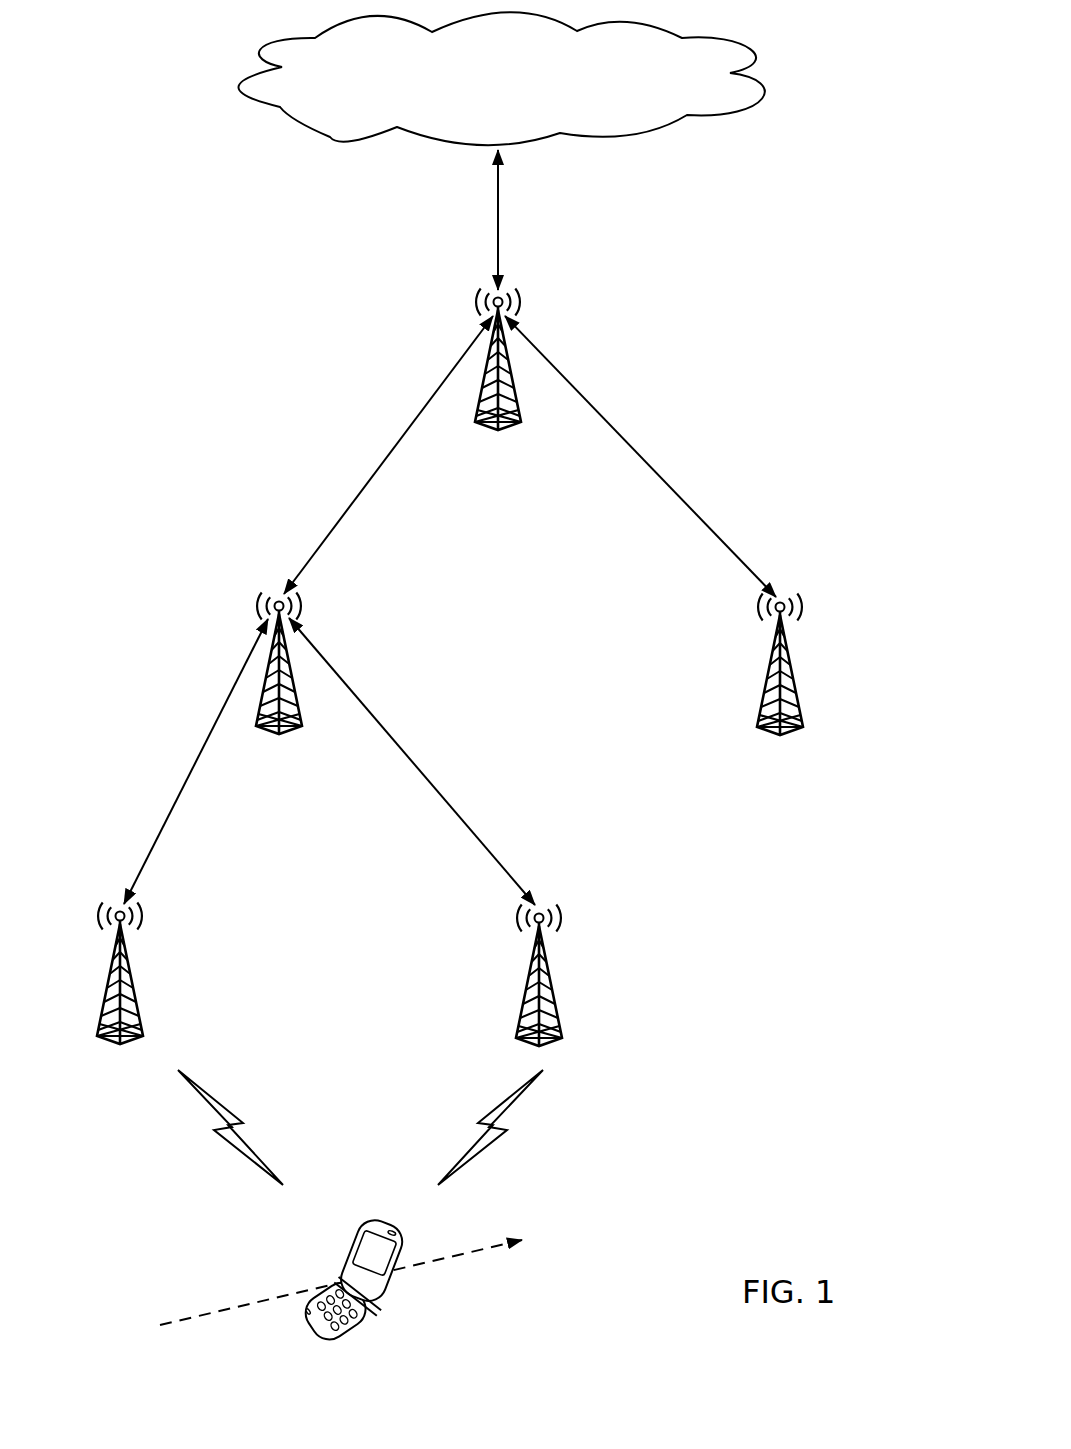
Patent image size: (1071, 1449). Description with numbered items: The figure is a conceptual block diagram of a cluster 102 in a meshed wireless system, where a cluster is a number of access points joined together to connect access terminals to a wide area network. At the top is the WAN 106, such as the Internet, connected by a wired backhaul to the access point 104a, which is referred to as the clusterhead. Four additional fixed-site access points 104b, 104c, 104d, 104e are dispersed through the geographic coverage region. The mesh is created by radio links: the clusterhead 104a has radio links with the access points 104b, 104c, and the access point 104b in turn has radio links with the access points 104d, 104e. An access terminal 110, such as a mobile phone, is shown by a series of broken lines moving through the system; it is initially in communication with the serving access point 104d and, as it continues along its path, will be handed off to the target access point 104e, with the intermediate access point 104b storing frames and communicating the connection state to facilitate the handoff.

The cluster 102 is at (736, 345).
The access point (clusterhead) 104a is at (498, 432).
The access point (intermediate access point) 104b is at (279, 736).
The access point 104c is at (780, 737).
The access point (serving access point) 104d is at (128, 985).
The access point (target access point) 104e is at (547, 985).
The WAN 106 is at (730, 40).
The access terminal 110 is at (358, 1322).